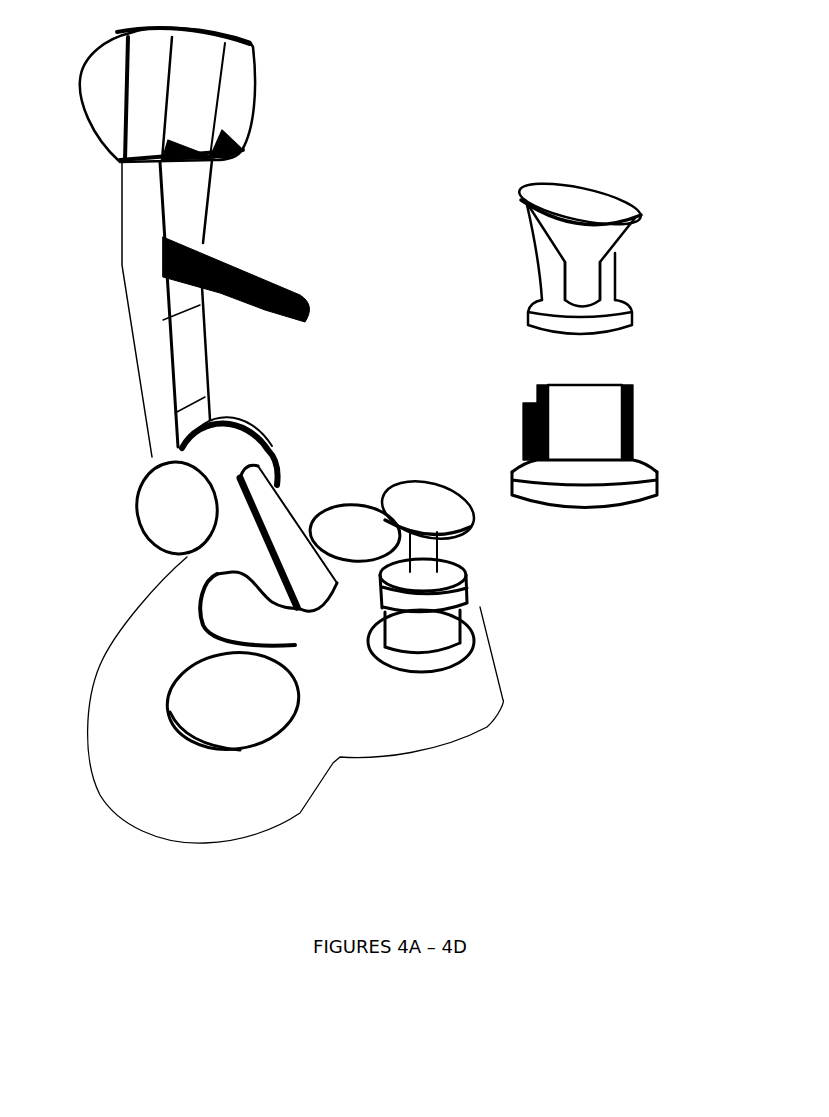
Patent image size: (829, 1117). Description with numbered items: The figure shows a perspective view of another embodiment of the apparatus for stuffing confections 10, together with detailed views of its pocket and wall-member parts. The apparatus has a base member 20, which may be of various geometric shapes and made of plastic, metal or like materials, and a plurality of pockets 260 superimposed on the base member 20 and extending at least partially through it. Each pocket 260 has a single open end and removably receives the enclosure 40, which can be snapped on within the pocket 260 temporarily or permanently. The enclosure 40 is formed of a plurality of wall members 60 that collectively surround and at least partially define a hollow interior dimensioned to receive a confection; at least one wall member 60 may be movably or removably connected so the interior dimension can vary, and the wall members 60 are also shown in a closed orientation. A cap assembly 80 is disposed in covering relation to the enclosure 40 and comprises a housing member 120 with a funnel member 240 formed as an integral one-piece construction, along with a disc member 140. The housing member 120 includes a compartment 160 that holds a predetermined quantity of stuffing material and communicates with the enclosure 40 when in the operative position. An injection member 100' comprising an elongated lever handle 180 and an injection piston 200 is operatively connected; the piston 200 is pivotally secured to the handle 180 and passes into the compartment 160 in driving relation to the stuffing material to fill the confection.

In FIG. 4A, the apparatus for stuffing confections 10 is at (466, 49).
In FIG. 4A, the injection member 100' is at (234, 95).
In FIG. 4A, the lever handle 180 is at (138, 193).
In FIG. 4A, the injection piston 200 is at (270, 293).
In FIG. 4A, the base member 20 is at (112, 717).
In FIG. 4A, the pockets 260 is at (370, 653).
In FIG. 4A, the compartment 160 is at (425, 528).
In FIG. 4B, the compartment 160 is at (580, 240).
In FIG. 4A, the enclosure 40 is at (460, 573).
In FIG. 4A, the wall members 60 is at (448, 632).
In FIG. 4B, the cap assembly 80 is at (568, 208).
In FIG. 4B, the funnel member 240 is at (620, 205).
In FIG. 4B, the housing member 120 is at (583, 282).
In FIG. 4B, the disc member 140 is at (607, 323).